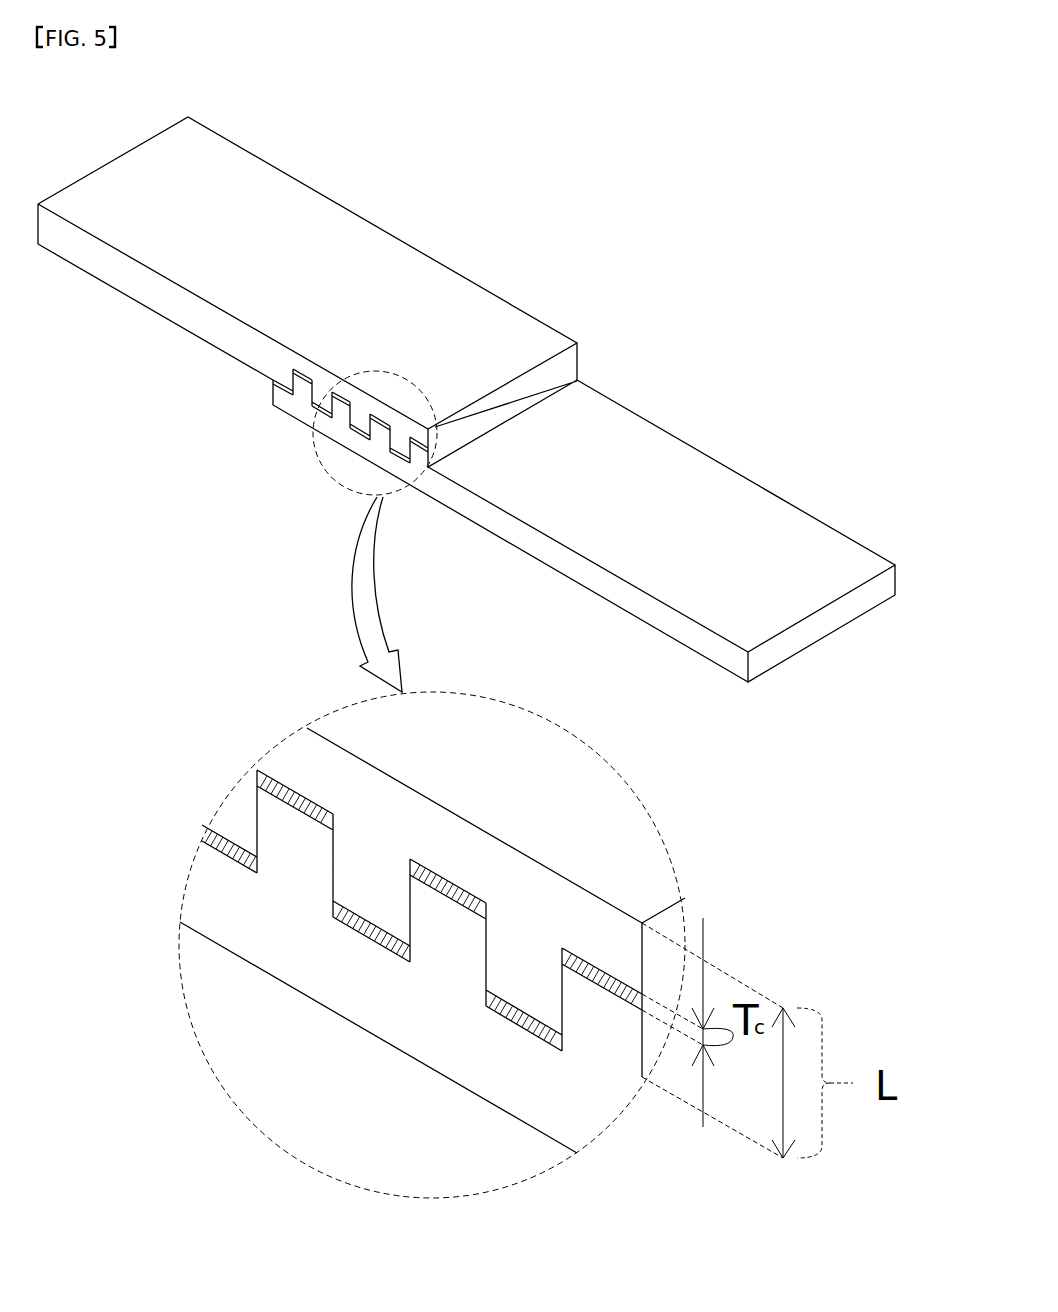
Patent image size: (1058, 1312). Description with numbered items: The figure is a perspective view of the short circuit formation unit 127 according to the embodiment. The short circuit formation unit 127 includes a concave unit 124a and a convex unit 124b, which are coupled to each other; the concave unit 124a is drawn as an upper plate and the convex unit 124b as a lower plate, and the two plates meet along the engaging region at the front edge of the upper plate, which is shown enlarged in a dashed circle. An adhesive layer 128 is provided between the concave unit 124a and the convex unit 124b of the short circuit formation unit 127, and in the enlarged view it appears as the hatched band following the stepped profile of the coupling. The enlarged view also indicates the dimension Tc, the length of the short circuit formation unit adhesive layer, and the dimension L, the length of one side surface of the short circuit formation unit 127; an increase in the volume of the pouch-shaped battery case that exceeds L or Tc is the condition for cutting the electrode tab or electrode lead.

The concave unit 124a is at (438, 268).
The convex unit 124b is at (645, 460).
The short circuit formation unit 127 is at (407, 418).
The adhesive layer 128 is at (460, 871).